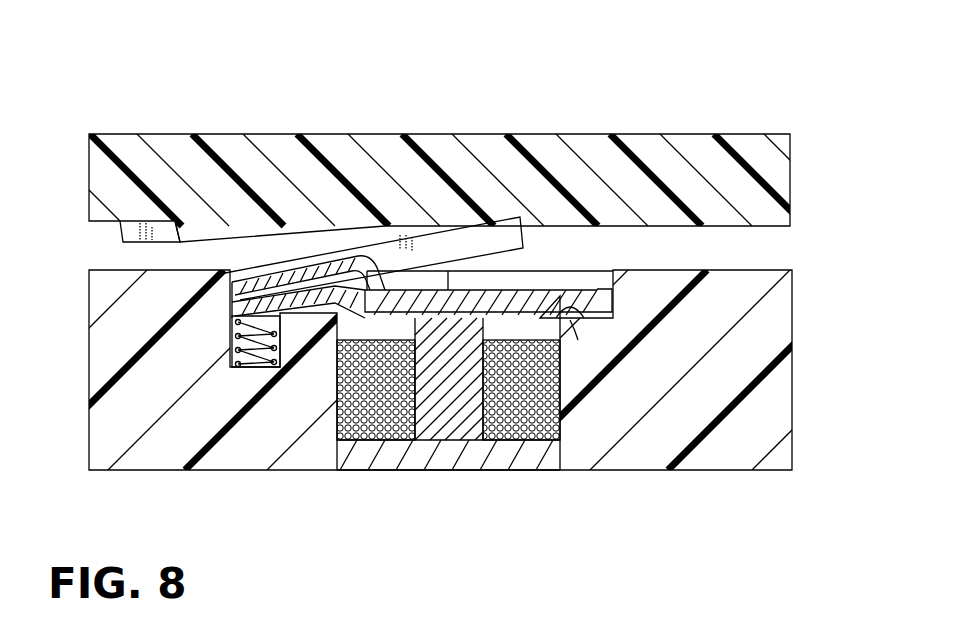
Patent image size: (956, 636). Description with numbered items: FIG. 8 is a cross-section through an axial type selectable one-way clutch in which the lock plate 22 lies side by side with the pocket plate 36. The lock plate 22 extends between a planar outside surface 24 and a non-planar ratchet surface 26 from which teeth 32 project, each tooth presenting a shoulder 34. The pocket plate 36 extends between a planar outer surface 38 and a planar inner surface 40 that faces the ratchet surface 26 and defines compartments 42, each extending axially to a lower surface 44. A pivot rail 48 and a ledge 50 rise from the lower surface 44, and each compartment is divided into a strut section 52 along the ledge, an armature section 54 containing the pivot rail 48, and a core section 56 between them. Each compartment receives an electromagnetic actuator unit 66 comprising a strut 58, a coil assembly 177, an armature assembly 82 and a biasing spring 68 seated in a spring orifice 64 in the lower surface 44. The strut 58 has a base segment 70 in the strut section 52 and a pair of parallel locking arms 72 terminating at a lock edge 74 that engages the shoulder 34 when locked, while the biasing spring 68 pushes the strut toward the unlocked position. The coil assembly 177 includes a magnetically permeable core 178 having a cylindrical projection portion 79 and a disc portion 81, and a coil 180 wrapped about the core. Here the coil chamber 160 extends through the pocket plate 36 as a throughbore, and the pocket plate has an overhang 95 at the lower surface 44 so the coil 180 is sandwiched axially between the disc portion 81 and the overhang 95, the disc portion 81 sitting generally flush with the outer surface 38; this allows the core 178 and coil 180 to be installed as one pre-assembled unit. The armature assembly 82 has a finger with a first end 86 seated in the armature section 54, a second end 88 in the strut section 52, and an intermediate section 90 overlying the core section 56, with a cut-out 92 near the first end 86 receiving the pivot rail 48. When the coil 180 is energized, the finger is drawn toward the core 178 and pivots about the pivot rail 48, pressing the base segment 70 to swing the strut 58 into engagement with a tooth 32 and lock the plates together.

The lock plate 22 is at (268, 128).
The outside surface 24 is at (574, 136).
The ratchet surface 26 is at (610, 228).
The teeth 32 is at (215, 240).
The shoulder 34 is at (180, 240).
The pocket plate 36 is at (798, 375).
The outer surface 38 is at (635, 470).
The inner surface 40 is at (700, 270).
The compartments 42 is at (340, 400).
The lower surface 44 is at (507, 444).
The pivot rail 48 is at (576, 428).
The ledge 50 is at (362, 330).
The strut section 52 is at (330, 322).
The armature section 54 is at (620, 320).
The core section 56 is at (352, 280).
The strut 58 is at (536, 230).
The spring orifice 64 is at (258, 340).
The electromagnetic actuator unit 66 is at (230, 316).
The biasing spring 68 is at (272, 368).
The base segment 70 is at (230, 340).
The locking arms 72 is at (470, 236).
The lock edge 74 is at (530, 220).
The projection portion 79 is at (440, 348).
The disc portion 81 is at (544, 452).
The armature assembly 82 is at (547, 285).
The first end 86 is at (612, 300).
The second end 88 is at (232, 268).
The intermediate section 90 is at (497, 214).
The cut-out 92 is at (578, 330).
The overhang 95 is at (602, 289).
The coil chamber 160 is at (365, 442).
The coil assembly 177 is at (560, 446).
The core 178 is at (447, 410).
The coil 180 is at (392, 442).